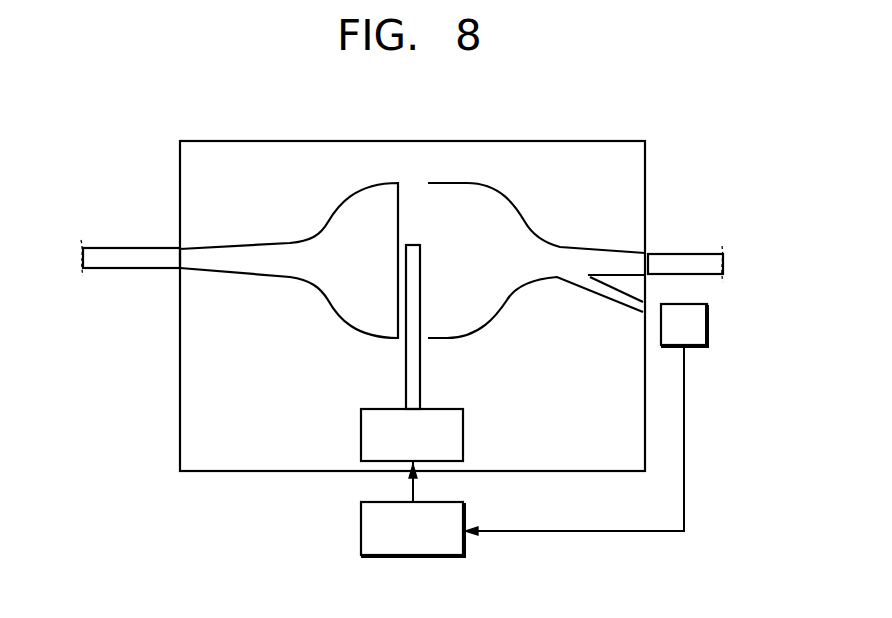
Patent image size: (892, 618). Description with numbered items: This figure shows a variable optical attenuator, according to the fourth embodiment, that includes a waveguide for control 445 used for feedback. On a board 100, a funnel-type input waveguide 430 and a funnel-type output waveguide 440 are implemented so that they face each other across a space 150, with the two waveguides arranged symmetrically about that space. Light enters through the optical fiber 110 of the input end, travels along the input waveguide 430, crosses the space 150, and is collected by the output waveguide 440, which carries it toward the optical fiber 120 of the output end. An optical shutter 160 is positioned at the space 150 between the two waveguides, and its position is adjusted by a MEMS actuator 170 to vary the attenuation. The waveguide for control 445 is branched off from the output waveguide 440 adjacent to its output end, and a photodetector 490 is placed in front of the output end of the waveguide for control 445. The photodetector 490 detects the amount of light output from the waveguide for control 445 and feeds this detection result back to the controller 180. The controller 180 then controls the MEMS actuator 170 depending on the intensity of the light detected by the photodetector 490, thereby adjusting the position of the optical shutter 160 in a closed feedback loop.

The board 100 is at (195, 393).
The optical fiber of the input end 110 is at (120, 247).
The optical fiber of the output end 120 is at (687, 254).
The space 150 is at (418, 210).
The optical shutter 160 is at (403, 358).
The MEMS actuator 170 is at (452, 465).
The controller 180 is at (452, 557).
The input waveguide 430 is at (348, 217).
The output waveguide 440 is at (477, 218).
The waveguide for control 445 is at (610, 298).
The photodetector 490 is at (708, 326).